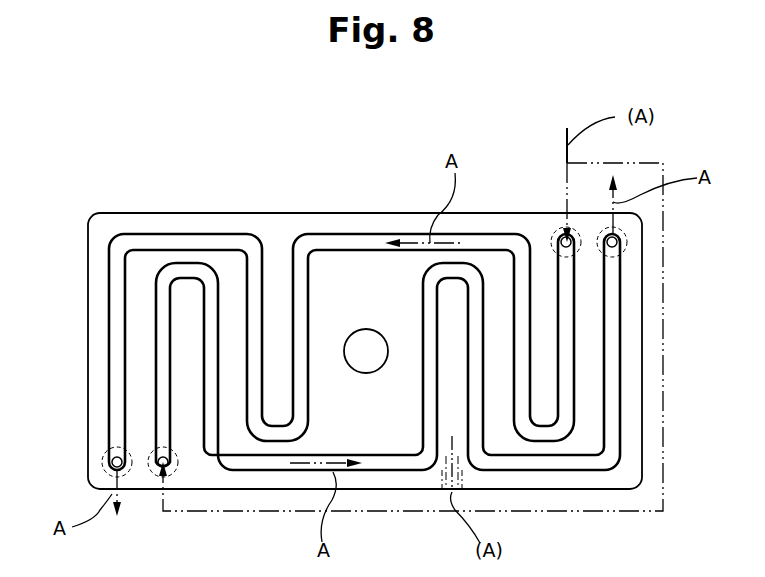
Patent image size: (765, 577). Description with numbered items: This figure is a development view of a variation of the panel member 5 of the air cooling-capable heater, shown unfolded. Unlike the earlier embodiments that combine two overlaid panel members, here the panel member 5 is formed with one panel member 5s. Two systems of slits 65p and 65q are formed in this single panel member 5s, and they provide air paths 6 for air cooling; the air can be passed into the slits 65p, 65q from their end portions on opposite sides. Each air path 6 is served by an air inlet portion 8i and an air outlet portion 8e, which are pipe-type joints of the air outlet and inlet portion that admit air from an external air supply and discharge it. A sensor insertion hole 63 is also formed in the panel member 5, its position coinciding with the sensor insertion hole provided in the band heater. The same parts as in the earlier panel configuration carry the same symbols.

The panel member 5 is at (387, 210).
The one panel member 5s is at (288, 212).
The air path 6 is at (158, 328).
The air inlet portion 8i is at (553, 240).
The air outlet portion 8e is at (625, 248).
The sensor insertion hole 63 is at (353, 340).
The slit 65p is at (180, 238).
The slit 65q is at (580, 462).